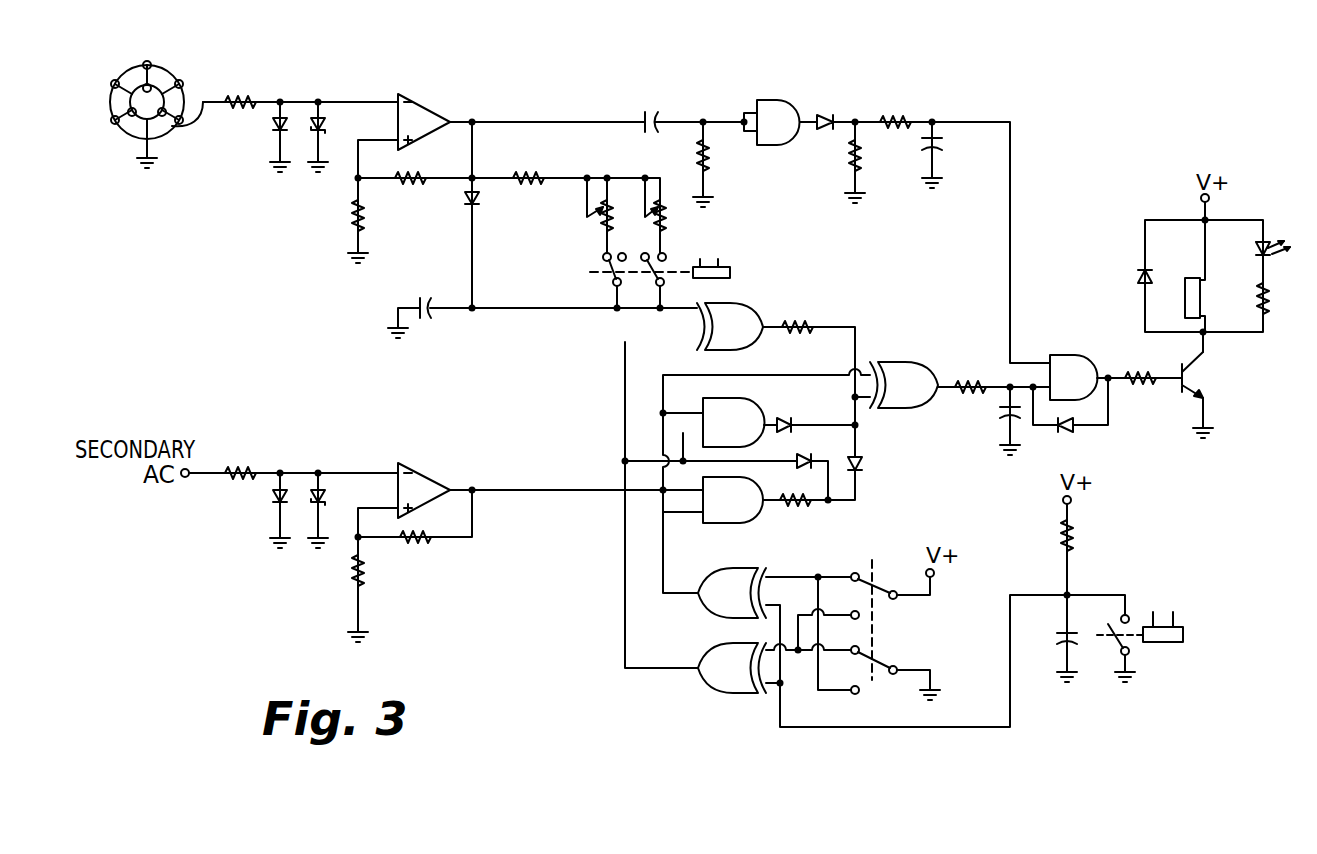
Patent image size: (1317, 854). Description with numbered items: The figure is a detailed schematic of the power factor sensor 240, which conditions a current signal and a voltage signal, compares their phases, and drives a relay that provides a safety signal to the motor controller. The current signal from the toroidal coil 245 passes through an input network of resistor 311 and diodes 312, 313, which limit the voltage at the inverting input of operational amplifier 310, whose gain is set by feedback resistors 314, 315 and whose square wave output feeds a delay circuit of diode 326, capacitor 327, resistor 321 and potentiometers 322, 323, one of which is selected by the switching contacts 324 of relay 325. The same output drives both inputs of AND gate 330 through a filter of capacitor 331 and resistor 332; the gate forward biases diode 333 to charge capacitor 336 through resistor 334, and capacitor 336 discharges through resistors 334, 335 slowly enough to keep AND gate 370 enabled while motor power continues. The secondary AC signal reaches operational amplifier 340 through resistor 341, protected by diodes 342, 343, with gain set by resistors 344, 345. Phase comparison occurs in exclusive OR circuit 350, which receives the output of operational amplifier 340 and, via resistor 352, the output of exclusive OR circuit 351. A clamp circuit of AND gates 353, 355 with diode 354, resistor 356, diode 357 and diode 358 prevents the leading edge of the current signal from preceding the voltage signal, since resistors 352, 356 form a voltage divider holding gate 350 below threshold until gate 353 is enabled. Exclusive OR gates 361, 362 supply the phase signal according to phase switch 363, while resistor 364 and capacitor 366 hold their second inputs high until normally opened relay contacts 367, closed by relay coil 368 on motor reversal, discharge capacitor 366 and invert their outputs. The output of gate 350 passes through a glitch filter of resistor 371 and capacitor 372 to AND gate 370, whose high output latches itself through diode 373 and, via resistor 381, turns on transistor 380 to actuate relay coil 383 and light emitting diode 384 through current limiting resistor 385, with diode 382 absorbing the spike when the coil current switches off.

The power factor sensor 240 is at (320, 302).
The toroidal coil 245 is at (183, 90).
The operational amplifier 310 is at (452, 75).
The resistor 311 is at (253, 100).
The diode 312 is at (278, 128).
The diode 313 is at (324, 124).
The resistor 314 is at (405, 182).
The resistor 315 is at (355, 210).
The resistor 321 is at (528, 176).
The potentiometer 322 is at (604, 222).
The potentiometer 323 is at (655, 190).
The switching contacts 324 is at (605, 268).
The relay 325 is at (732, 272).
The diode 326 is at (475, 212).
The capacitor 327 is at (440, 275).
The AND gate 330 is at (800, 78).
The capacitor 331 is at (655, 110).
The resistor 332 is at (708, 165).
The diode 333 is at (826, 118).
The resistor 334 is at (897, 118).
The resistor 335 is at (856, 162).
The capacitor 336 is at (943, 144).
The operational amplifier 340 is at (455, 450).
The resistor 341 is at (262, 455).
The diode 342 is at (276, 500).
The diode 343 is at (325, 497).
The resistor 344 is at (415, 545).
The resistor 345 is at (355, 580).
The exclusive OR circuit 350 is at (895, 360).
The exclusive OR circuit 351 is at (752, 306).
The resistor 352 is at (812, 320).
The AND gate 353 is at (782, 392).
The diode 354 is at (790, 422).
The AND gate 355 is at (760, 523).
The resistor 356 is at (808, 497).
The diode 357 is at (830, 448).
The diode 358 is at (861, 462).
The exclusive OR gate 361 is at (718, 566).
The exclusive OR gate 362 is at (718, 645).
The phase switch 363 is at (875, 630).
The resistor 364 is at (1066, 540).
The capacitor 366 is at (1058, 638).
The normally opened relay contacts 367 is at (1116, 652).
The relay coil 368 is at (1185, 635).
The AND gate 370 is at (1095, 340).
The resistor 371 is at (985, 375).
The capacitor 372 is at (1000, 412).
The diode 373 is at (1066, 432).
The transistor 380 is at (1190, 355).
The resistor 381 is at (1140, 378).
The diode 382 is at (1142, 275).
The relay coil 383 is at (1193, 280).
The light emitting diode 384 is at (1262, 248).
The current limiting resistor 385 is at (1262, 300).